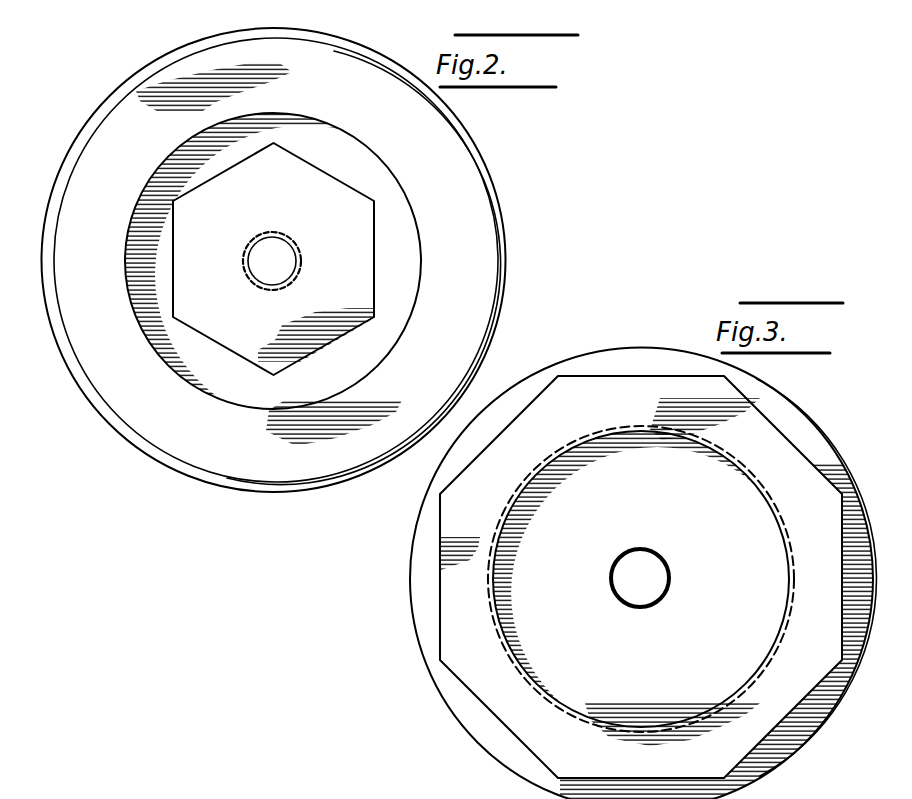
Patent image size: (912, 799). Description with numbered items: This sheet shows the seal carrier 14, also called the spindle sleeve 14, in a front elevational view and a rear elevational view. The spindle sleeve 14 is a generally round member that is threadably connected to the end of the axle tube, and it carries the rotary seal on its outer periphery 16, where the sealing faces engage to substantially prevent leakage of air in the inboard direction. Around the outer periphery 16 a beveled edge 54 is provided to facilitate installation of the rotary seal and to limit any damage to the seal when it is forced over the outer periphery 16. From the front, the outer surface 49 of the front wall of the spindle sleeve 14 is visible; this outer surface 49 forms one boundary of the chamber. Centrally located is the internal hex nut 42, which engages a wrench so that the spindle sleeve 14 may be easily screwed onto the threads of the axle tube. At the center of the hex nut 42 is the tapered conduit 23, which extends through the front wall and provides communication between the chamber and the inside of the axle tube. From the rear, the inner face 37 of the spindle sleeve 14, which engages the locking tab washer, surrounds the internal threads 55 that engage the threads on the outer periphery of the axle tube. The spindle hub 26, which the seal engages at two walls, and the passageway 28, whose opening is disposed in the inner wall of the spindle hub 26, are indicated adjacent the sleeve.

In FIG. 2, the seal carrier 14 is at (138, 462).
In FIG. 3, the seal carrier 14 is at (678, 340).
In FIG. 2, the outer periphery 16 is at (507, 250).
In FIG. 3, the outer periphery 16 is at (409, 580).
In FIG. 2, the beveled edge 54 is at (488, 181).
In FIG. 2, the outer surface 49 is at (236, 466).
In FIG. 2, the internal hex nut 42 is at (337, 338).
In FIG. 2, the conduit 23 is at (296, 265).
In FIG. 3, the conduit 23 is at (668, 569).
In FIG. 3, the threads 55 is at (723, 462).
In FIG. 3, the inner face 37 is at (463, 668).
In FIG. 3, the spindle hub 26 is at (343, 792).
In FIG. 3, the passageway 28 is at (437, 798).